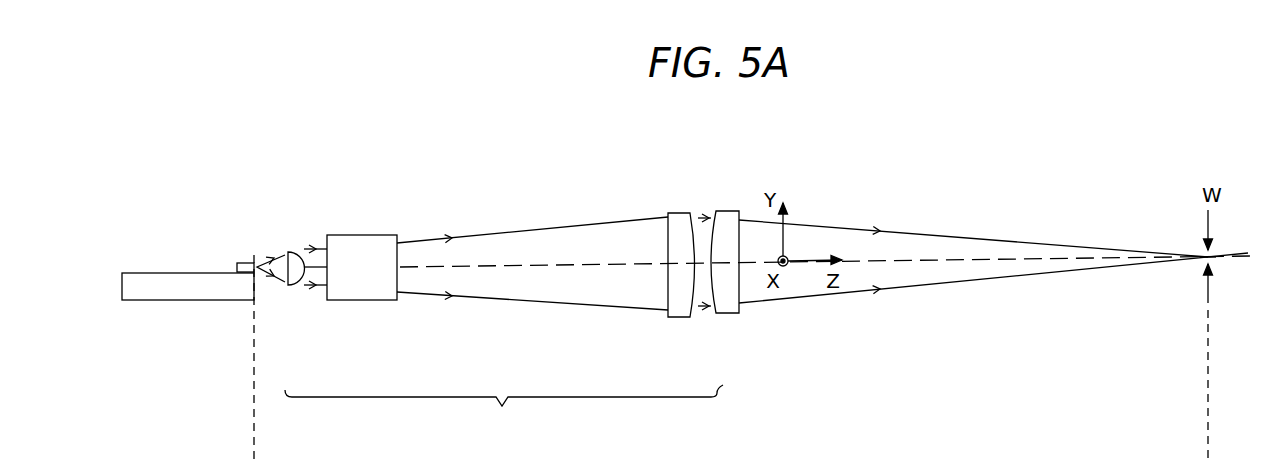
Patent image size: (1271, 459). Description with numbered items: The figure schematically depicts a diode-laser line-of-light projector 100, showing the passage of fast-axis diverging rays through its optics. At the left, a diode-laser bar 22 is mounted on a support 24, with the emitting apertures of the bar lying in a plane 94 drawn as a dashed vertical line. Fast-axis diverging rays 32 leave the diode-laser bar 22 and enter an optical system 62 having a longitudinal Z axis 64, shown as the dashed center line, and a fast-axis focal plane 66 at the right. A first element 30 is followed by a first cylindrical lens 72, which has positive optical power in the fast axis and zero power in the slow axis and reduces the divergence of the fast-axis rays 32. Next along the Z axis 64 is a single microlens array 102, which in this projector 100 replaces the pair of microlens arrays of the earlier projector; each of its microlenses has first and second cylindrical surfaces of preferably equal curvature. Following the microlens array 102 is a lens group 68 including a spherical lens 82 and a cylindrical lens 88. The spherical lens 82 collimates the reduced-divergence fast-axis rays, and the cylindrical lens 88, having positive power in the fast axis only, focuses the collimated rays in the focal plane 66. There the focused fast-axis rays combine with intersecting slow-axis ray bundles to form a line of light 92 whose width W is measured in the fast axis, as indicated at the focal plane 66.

The diode-laser line-of-light projector 100 is at (823, 158).
The substrate / mount 24 is at (183, 285).
The diode-laser bar 22 is at (237, 260).
The collimating lens 30 is at (263, 257).
The fast-axis diverging rays 32 is at (279, 322).
The first cylindrical lens 72 is at (297, 283).
The microlens array 102 is at (365, 233).
The longitudinal (Z) axis 64 is at (512, 265).
The spherical lens 82 is at (678, 222).
The cylindrical lens 88 is at (730, 212).
The lens group 68 is at (707, 261).
The line of light 92 is at (1203, 250).
The fast-axis focal plane 66 is at (1207, 353).
The plane 94 is at (253, 428).
The optical system 62 is at (504, 411).